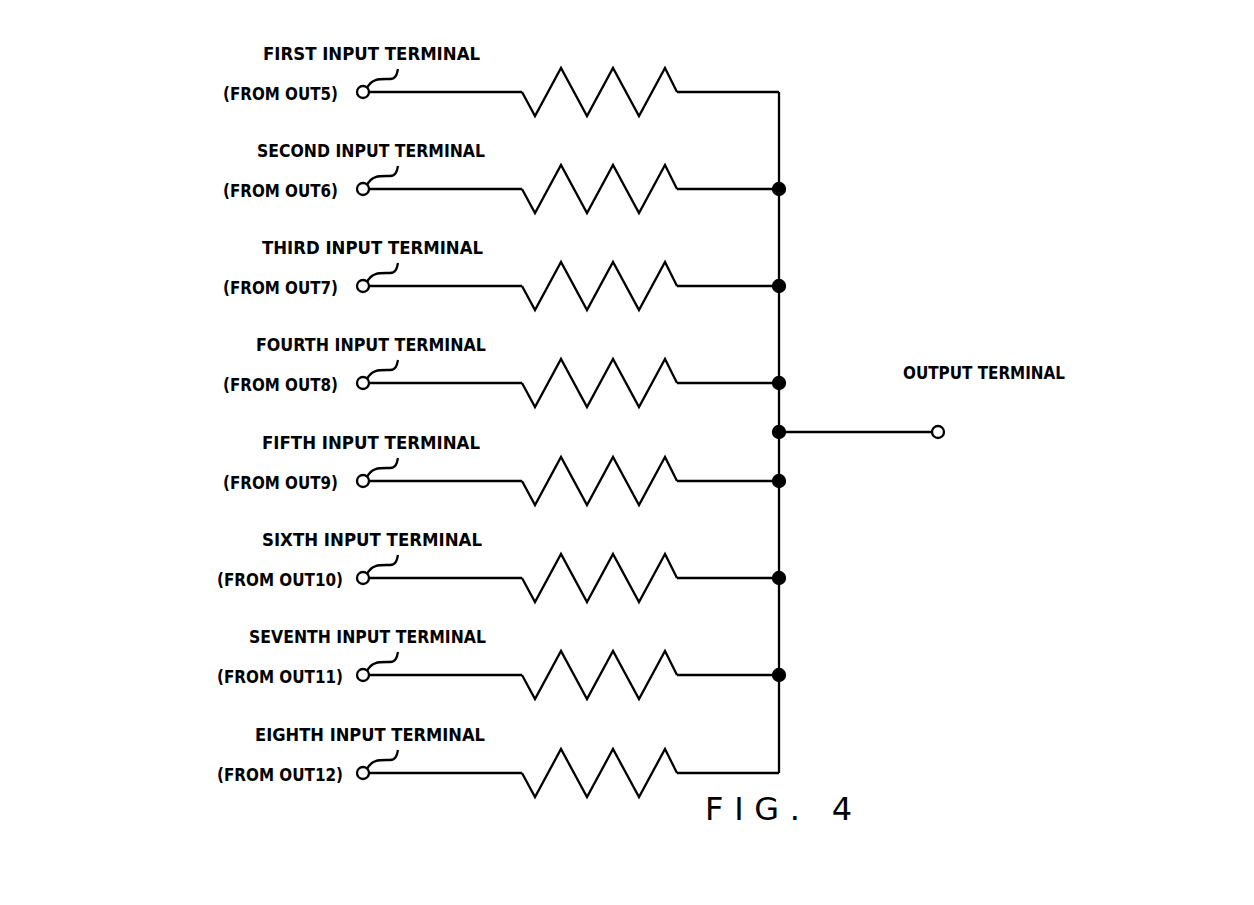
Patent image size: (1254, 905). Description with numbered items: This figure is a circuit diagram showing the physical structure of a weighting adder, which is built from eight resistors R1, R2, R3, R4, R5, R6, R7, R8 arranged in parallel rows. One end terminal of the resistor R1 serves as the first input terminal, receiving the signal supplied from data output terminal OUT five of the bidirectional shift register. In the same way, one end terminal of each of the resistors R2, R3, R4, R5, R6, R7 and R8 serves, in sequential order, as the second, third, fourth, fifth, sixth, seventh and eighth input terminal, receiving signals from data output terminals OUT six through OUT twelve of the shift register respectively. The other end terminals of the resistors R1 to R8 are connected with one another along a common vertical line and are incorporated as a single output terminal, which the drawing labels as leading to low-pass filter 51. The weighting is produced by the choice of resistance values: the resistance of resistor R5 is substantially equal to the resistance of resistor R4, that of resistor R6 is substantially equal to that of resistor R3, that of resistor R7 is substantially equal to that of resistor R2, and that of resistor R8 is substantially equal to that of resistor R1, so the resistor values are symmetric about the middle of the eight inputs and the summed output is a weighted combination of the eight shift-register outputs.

The resistor R1 is at (665, 70).
The resistor R2 is at (665, 167).
The resistor R3 is at (665, 264).
The resistor R4 is at (665, 361).
The resistor R5 is at (665, 459).
The resistor R6 is at (665, 556).
The resistor R7 is at (665, 653).
The resistor R8 is at (665, 751).
The low-pass filter 51 is at (973, 386).